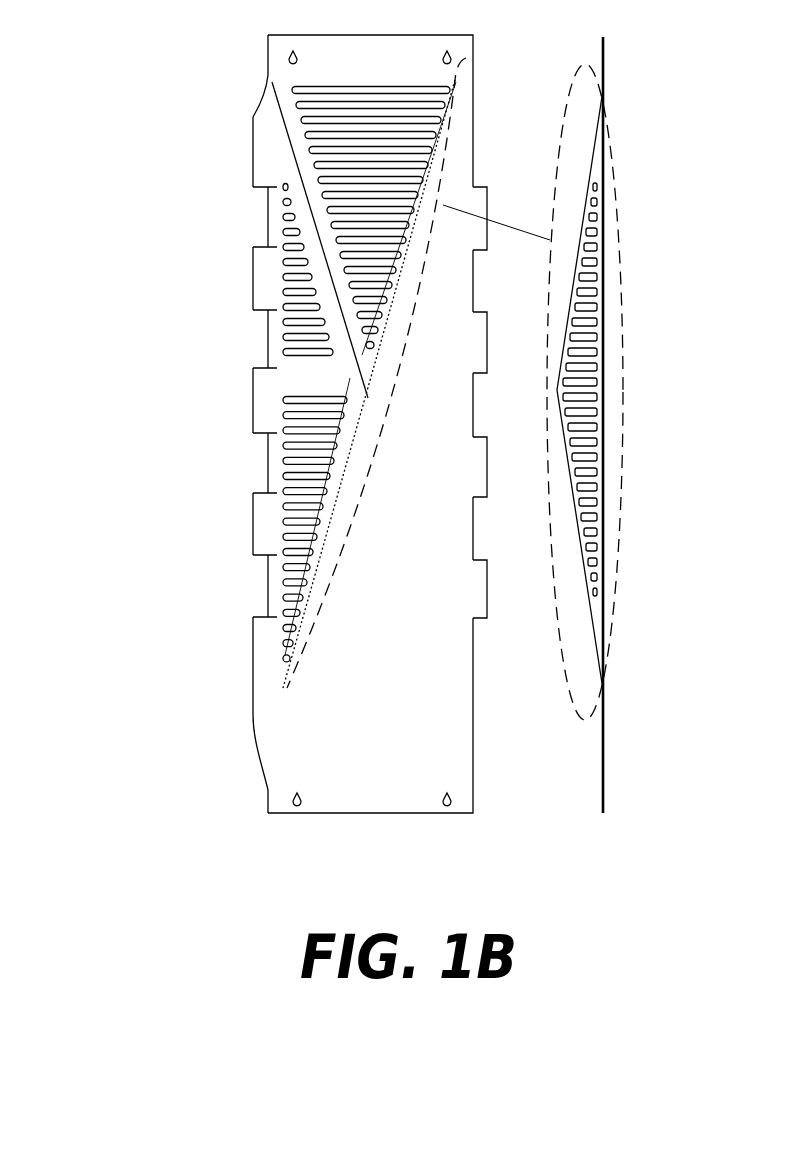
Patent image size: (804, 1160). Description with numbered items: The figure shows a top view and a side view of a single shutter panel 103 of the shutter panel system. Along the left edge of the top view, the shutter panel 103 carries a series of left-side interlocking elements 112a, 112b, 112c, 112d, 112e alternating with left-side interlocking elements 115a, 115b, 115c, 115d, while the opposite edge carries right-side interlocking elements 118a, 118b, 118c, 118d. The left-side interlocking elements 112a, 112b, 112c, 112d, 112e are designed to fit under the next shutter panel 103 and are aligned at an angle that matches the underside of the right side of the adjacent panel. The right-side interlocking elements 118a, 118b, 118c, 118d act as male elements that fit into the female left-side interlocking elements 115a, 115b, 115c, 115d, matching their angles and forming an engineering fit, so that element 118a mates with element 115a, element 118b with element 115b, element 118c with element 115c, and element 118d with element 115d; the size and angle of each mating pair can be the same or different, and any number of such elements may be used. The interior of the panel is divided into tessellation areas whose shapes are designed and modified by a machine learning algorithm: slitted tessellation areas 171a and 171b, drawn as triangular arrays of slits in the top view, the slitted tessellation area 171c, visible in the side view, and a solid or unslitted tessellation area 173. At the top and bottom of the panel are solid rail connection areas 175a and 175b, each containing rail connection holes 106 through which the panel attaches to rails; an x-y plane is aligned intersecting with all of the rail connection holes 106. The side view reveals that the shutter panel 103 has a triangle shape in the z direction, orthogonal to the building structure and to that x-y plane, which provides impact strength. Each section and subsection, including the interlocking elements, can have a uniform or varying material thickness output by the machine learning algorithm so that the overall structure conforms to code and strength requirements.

The shutter panel 103 is at (119, 75).
The rail connection holes 106 is at (280, 54).
The left-side interlocking element 112a is at (270, 160).
The left-side interlocking element 112b is at (268, 285).
The left-side interlocking element 112c is at (271, 403).
The left-side interlocking element 112d is at (268, 523).
The left-side interlocking element 112e is at (268, 667).
The left-side interlocking element 115a is at (272, 225).
The left-side interlocking element 115b is at (275, 340).
The left-side interlocking element 115c is at (277, 465).
The left-side interlocking element 115d is at (277, 587).
The right-side interlocking element 118a is at (475, 200).
The right-side interlocking element 118b is at (474, 322).
The right-side interlocking element 118c is at (474, 447).
The right-side interlocking element 118d is at (474, 572).
The slitted tessellation area 171a is at (364, 240).
The slitted tessellation area 171b is at (316, 423).
The slitted tessellation area 171c is at (592, 368).
The solid or unslitted tessellation area 173 is at (376, 373).
The solid rail connection area 175a is at (365, 54).
The solid rail connection area 175b is at (371, 785).